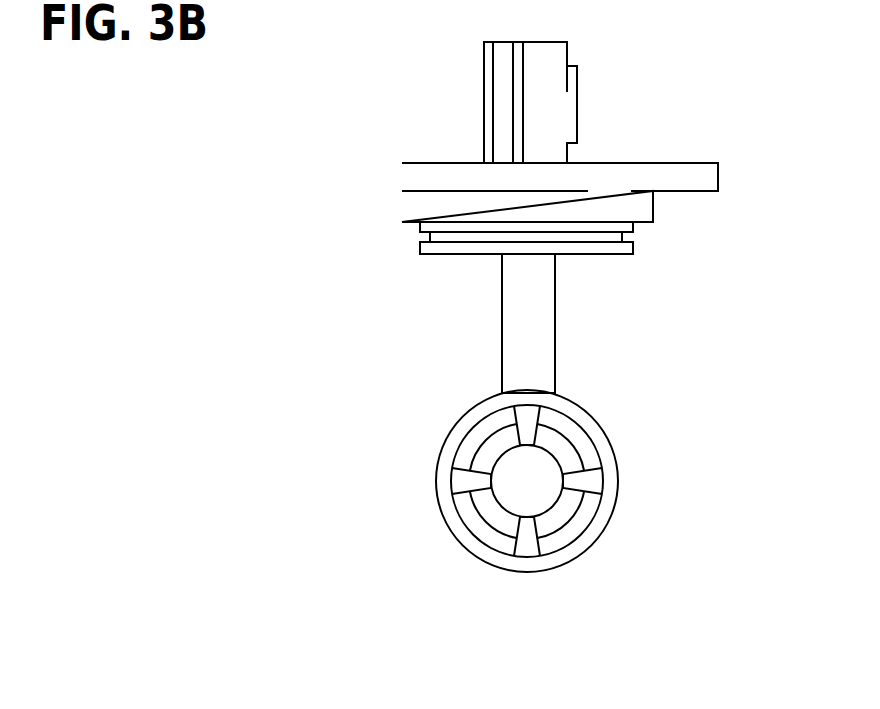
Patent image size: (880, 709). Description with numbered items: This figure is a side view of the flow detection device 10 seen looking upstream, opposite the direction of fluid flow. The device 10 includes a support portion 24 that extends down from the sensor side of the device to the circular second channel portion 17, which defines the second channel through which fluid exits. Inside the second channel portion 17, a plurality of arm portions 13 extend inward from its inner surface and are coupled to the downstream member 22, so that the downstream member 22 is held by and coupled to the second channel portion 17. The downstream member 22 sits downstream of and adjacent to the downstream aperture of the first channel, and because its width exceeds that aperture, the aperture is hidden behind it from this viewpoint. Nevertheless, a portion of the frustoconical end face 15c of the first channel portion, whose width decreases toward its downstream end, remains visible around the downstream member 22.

The flow detection device 10 is at (663, 162).
The support portion 24 is at (555, 301).
The second channel portion 17 is at (457, 421).
The end face 15c is at (563, 516).
The downstream member 22 is at (550, 465).
The arm portions 13 is at (530, 434).